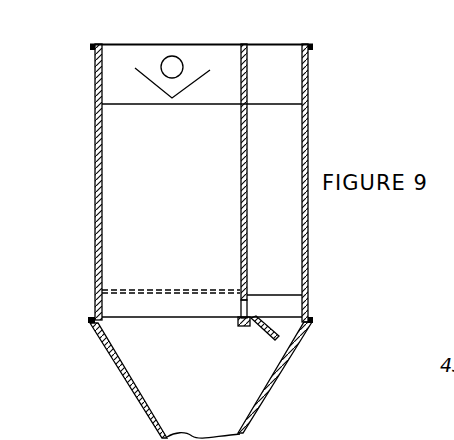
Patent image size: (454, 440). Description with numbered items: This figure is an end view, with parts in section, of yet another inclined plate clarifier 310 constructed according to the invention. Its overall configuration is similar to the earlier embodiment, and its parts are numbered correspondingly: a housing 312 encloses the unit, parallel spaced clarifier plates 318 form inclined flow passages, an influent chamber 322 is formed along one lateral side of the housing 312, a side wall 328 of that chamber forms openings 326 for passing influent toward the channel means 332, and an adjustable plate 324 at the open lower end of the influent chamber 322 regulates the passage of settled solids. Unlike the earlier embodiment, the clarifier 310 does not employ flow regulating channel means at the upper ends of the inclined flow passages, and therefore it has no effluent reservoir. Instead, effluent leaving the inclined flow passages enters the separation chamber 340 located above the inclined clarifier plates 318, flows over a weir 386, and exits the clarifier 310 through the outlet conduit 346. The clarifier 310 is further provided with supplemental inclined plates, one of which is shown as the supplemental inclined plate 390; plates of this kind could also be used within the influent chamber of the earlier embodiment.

The clarifier 310 is at (364, 77).
The housing top plate 312 is at (97, 50).
The main chamber 318 is at (195, 180).
The housing wall 322 is at (282, 97).
The deflector bar 324 is at (263, 327).
The partition bottom connection 326 is at (242, 299).
The partition wall 328 is at (243, 220).
The bottom plate 332 is at (112, 302).
The separation chamber 340 is at (235, 101).
The outlet conduit 346 is at (178, 61).
The weir 386 is at (138, 82).
The supplemental inclined plate 390 is at (292, 161).